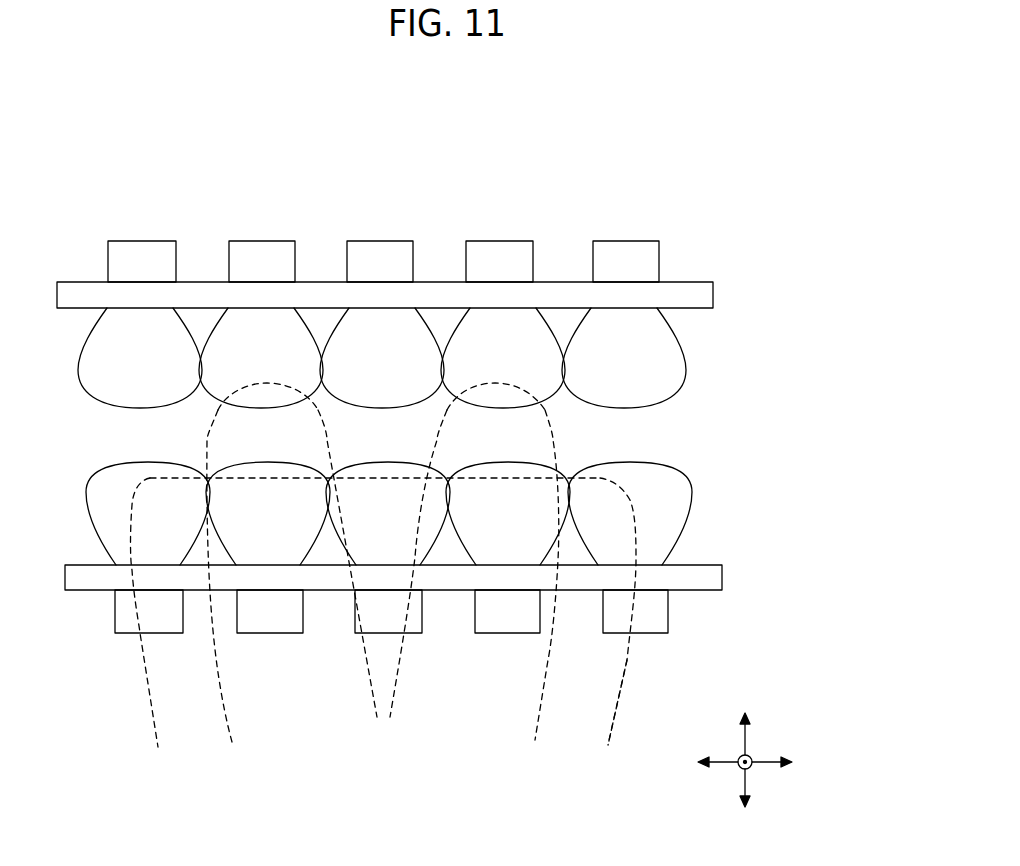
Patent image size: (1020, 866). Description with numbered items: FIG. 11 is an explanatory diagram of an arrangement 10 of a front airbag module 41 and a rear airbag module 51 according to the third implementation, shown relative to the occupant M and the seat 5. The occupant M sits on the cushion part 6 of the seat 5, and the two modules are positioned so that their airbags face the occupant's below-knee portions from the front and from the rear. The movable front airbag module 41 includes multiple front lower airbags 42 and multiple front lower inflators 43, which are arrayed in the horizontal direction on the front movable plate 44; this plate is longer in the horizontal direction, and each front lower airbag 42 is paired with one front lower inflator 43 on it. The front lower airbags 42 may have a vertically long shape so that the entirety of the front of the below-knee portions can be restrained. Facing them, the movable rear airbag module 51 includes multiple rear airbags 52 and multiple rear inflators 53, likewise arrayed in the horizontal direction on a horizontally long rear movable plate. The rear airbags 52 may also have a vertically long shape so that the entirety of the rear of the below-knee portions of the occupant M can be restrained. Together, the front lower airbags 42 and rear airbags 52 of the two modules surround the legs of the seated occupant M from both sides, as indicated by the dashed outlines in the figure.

The lighting device 10 is at (712, 183).
The front airbag module 41 is at (716, 256).
The front lower airbag 42 is at (98, 405).
The front lower inflator 43 is at (140, 240).
The front movable plate 44 is at (714, 297).
The rear airbag module 51 is at (714, 544).
The rear airbag 52 is at (128, 465).
The rear inflator 53 is at (168, 636).
The occupant M is at (453, 707).
The cushion part 6 is at (597, 743).
The seat 5 is at (576, 738).